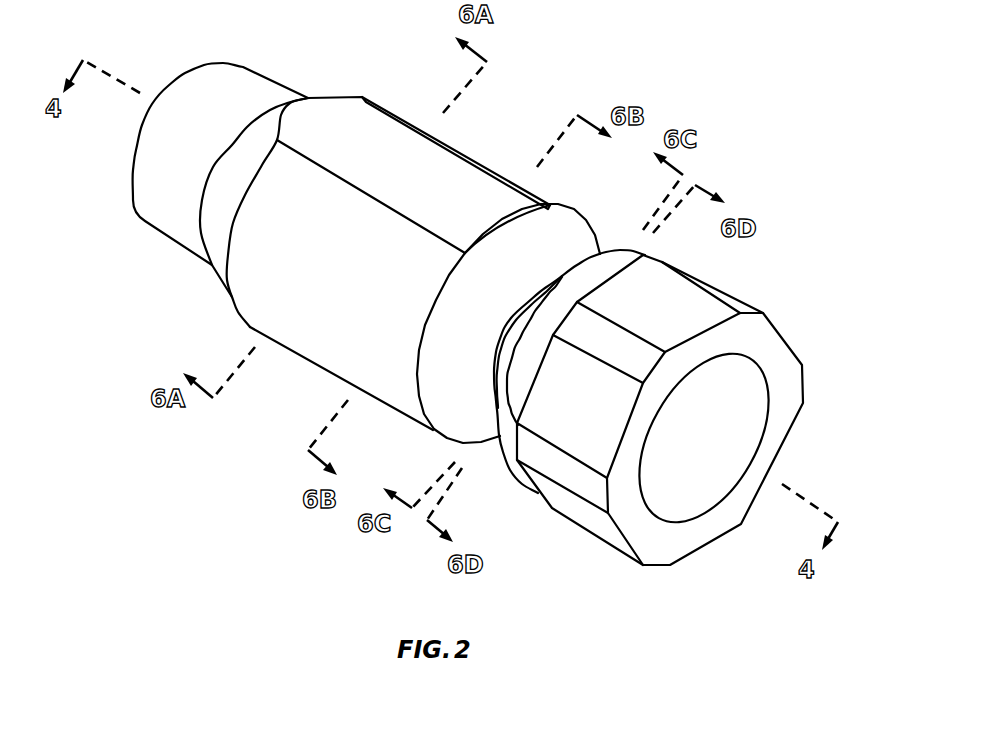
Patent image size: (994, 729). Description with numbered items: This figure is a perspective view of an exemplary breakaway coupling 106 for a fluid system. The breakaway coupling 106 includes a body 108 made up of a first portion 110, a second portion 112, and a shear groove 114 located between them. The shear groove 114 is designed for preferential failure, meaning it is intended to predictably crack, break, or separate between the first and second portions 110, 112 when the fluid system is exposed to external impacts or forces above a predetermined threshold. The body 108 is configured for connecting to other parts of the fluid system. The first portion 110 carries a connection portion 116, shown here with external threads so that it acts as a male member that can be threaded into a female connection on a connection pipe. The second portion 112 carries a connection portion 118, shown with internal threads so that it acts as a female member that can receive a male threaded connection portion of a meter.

The breakaway coupling 106 is at (508, 295).
The body 108 is at (378, 452).
The first portion 110 is at (413, 316).
The second portion 112 is at (700, 410).
The shear groove 114 is at (605, 243).
The connection portion 116 is at (283, 60).
The connection portion 118 is at (727, 407).